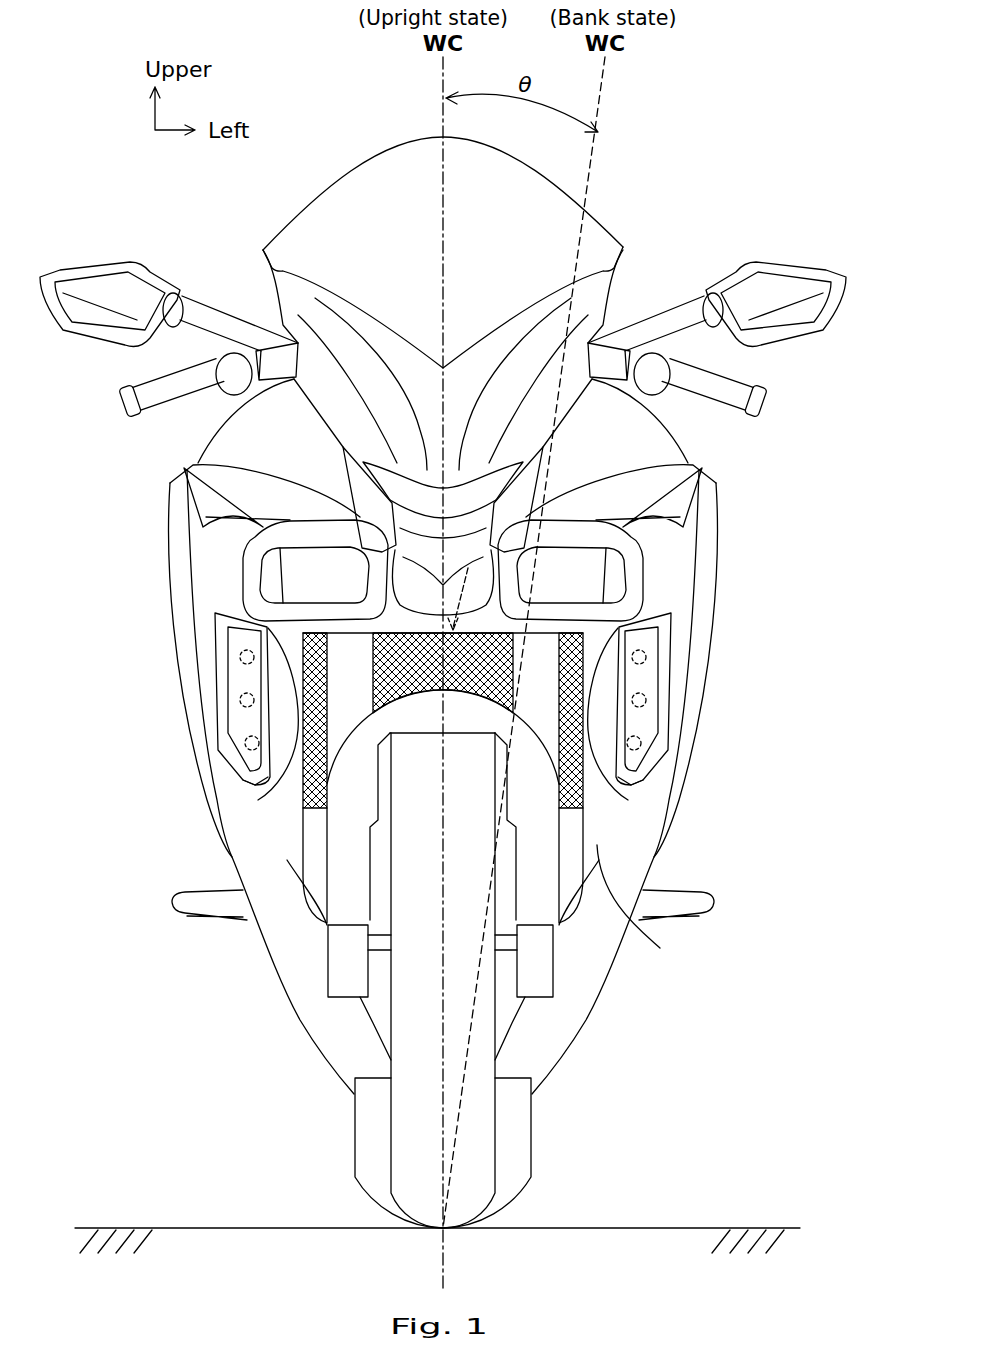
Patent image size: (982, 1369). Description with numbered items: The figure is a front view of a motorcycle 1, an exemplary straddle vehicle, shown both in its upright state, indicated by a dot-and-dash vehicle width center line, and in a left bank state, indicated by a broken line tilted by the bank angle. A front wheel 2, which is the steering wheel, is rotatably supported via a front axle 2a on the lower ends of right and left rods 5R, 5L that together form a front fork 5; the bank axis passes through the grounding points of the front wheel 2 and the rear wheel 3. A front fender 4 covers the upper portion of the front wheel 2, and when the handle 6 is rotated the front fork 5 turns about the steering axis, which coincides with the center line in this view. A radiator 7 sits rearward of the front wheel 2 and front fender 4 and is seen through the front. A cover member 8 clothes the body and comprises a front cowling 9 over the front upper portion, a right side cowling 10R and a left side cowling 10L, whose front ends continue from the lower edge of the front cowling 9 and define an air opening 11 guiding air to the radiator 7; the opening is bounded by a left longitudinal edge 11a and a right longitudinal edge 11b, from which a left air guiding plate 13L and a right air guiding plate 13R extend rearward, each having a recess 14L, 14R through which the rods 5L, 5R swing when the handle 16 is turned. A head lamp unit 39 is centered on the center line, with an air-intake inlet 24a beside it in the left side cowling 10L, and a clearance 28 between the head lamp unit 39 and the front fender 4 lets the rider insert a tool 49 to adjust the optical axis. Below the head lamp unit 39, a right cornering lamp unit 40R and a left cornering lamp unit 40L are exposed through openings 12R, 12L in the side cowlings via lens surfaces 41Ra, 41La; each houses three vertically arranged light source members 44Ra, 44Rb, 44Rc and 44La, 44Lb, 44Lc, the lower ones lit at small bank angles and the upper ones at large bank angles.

The motorcycle 1 is at (318, 148).
The front wheel 2 is at (467, 1162).
The front axle 2a is at (380, 945).
The rear wheel 3 is at (512, 1115).
The front fender 4 is at (368, 922).
The front fork 5 is at (349, 1006).
The right rod 5R is at (337, 705).
The left rod 5L is at (524, 705).
The handle 6 is at (723, 370).
The radiator 7 is at (308, 855).
The cover member 8 is at (712, 446).
The front cowling 9 is at (207, 440).
The right side cowling 10R is at (177, 473).
The left side cowling 10L is at (707, 470).
The air opening 11 is at (582, 855).
The left longitudinal edge 11a is at (660, 948).
The right longitudinal edge 11b is at (306, 868).
The opening 12R is at (215, 630).
The opening 12L is at (670, 630).
The right air guiding plate 13R is at (272, 765).
The left air guiding plate 13L is at (614, 765).
The recess 14R is at (233, 770).
The recess 14L is at (653, 770).
The handle 16 is at (180, 902).
The air-intake inlet 24a is at (573, 577).
The clearance 28 is at (620, 522).
The head lamp unit 39 is at (210, 557).
The right cornering lamp unit 40R is at (228, 660).
The left cornering lamp unit 40L is at (660, 660).
The lens surface 41Ra is at (243, 767).
The lens surface 41La is at (645, 767).
The right light source member 44Rc is at (243, 663).
The right light source member 44Rb is at (247, 707).
The right light source member 44Ra is at (252, 750).
The left light source member 44Lc is at (645, 663).
The left light source member 44Lb is at (640, 707).
The left light source member 44La is at (635, 750).
The tool 49 is at (417, 697).